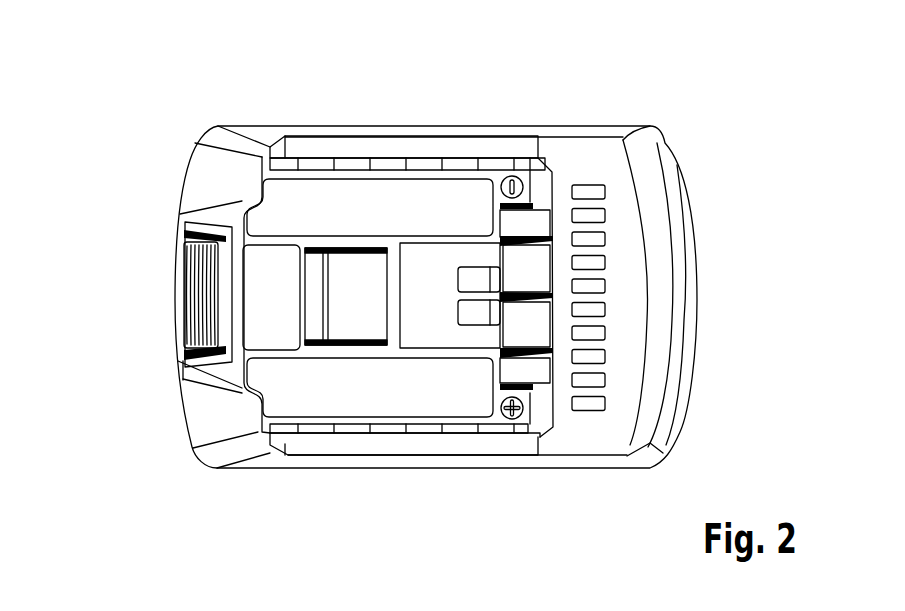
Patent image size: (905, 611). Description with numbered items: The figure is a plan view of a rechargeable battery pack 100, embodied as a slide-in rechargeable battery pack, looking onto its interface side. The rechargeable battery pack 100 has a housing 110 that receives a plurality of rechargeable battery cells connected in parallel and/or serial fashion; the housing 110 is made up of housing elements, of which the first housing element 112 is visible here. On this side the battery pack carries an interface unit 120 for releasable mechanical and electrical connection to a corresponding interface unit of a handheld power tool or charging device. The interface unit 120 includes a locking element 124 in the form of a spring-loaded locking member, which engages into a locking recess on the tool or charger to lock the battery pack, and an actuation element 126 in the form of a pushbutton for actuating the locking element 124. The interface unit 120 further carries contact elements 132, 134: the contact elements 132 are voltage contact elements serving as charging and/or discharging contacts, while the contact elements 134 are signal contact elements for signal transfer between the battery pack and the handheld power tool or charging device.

The rechargeable battery pack 100 is at (174, 73).
The housing 110 is at (164, 128).
The first housing element 112 is at (198, 413).
The interface unit 120 is at (606, 86).
The locking element 124 is at (352, 275).
The actuation element 126 is at (182, 296).
The contact elements 132 is at (530, 172).
The contact elements 134 is at (533, 241).